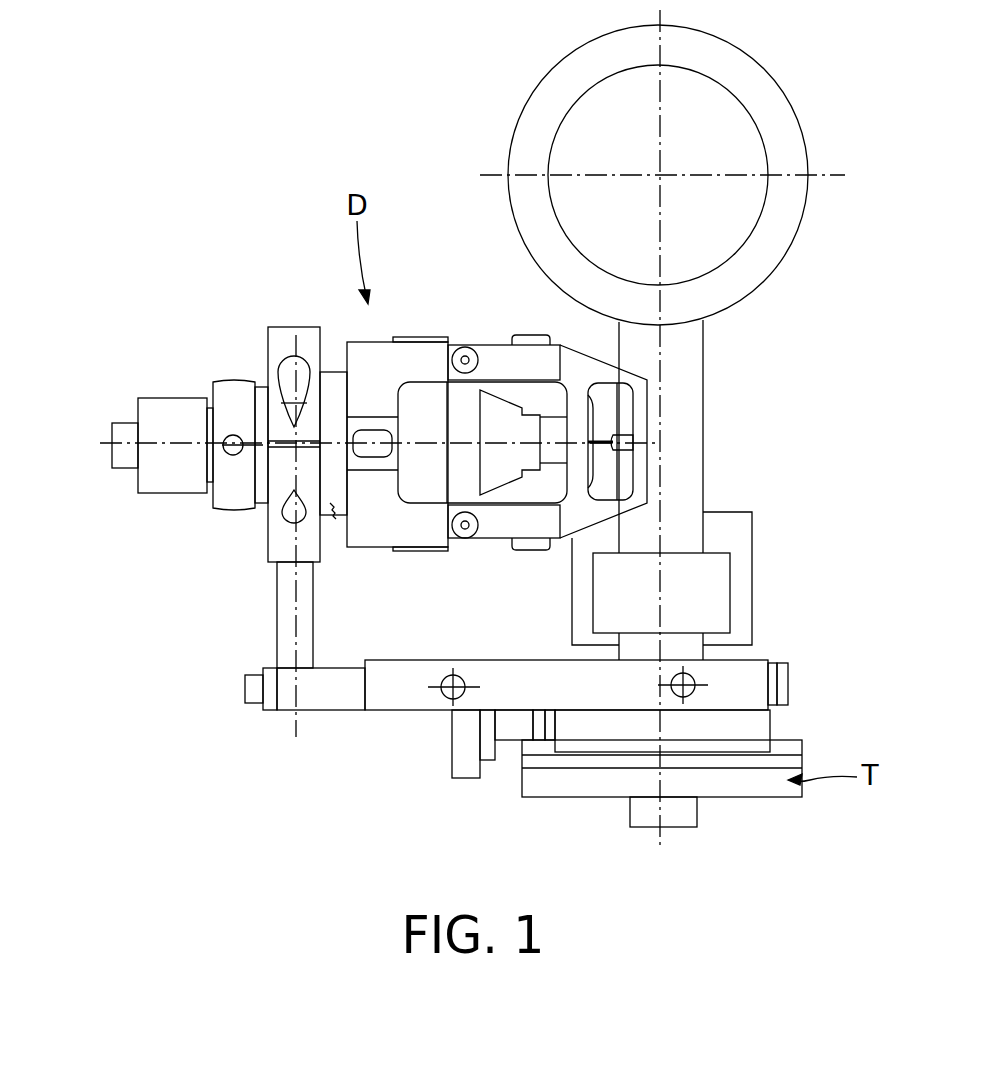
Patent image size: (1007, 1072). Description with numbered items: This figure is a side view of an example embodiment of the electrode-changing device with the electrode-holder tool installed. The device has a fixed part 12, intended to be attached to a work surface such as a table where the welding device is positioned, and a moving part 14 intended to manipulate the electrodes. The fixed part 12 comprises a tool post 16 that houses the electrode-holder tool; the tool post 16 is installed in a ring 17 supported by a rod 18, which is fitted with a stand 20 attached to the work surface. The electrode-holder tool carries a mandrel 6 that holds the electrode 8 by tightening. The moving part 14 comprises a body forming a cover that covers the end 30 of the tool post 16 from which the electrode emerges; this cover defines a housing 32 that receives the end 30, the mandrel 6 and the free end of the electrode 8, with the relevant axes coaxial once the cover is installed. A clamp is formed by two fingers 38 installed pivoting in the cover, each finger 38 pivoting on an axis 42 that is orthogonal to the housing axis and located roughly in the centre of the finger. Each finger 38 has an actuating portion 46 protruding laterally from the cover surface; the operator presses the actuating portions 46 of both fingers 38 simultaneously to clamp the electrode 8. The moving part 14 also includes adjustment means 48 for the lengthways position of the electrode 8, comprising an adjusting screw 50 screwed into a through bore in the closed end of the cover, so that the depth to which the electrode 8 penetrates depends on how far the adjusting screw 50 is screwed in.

The mandrel 6 is at (528, 462).
The electrode 8 is at (610, 447).
The fixed part 12 is at (531, 433).
The moving part 14 is at (489, 329).
The tool post 16 is at (334, 514).
The ring 17 is at (285, 343).
The rod 18 is at (290, 613).
The stand 20 is at (397, 703).
The end of tool post 30 is at (493, 470).
The housing 32 is at (533, 392).
The fingers 38 is at (430, 337).
The axis 42 is at (466, 346).
The actuating portion 46 is at (530, 342).
The adjustment means 48 is at (636, 417).
The adjusting screw 50 is at (612, 445).